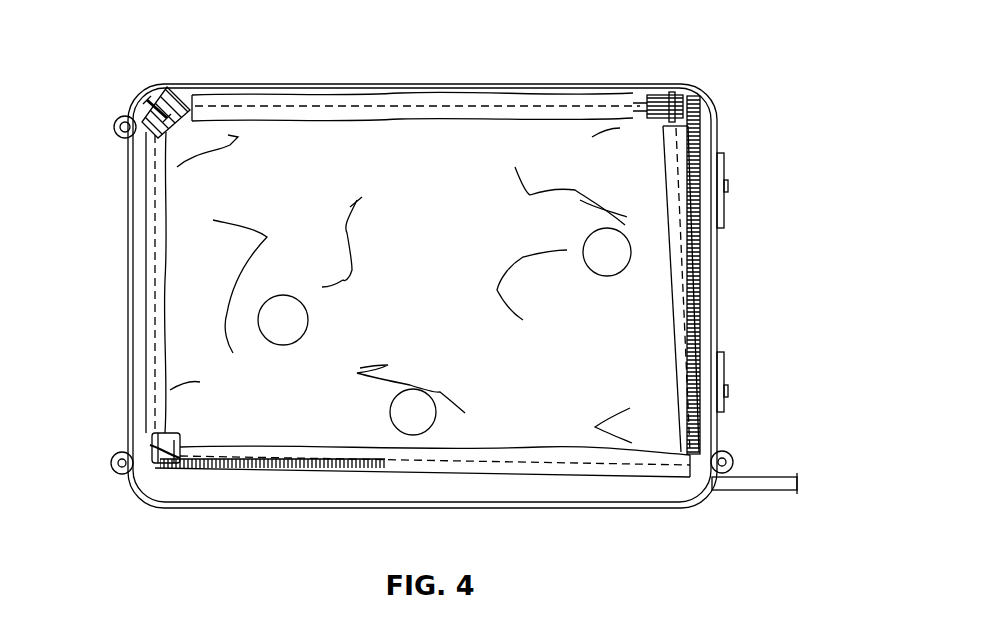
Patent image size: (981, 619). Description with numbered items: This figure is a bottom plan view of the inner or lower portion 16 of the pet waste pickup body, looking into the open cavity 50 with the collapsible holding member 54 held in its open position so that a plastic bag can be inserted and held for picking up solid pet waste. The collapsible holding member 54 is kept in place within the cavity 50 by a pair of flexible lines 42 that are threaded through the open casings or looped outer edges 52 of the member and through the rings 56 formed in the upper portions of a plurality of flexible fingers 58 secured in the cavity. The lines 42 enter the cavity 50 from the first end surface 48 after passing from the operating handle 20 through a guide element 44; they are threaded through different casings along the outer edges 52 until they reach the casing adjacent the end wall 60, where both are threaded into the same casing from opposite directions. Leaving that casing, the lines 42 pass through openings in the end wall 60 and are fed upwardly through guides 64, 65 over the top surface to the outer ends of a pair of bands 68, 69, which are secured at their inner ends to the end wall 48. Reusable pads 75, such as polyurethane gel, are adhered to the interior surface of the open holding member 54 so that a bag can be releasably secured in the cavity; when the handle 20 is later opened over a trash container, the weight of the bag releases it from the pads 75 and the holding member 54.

The inner or lower portion 16 is at (731, 100).
The actuation or operating handle or lever 20 is at (756, 490).
The pair of flexible elongated lines 42 is at (384, 106).
The guide element 44 is at (732, 458).
The first end surface 48 is at (717, 291).
The open cavity 50 is at (604, 502).
The open casings or looped outer edges 52 is at (536, 106).
The collapsible holding member 54 is at (434, 309).
The openings, securing elements or rings 56 is at (161, 90).
The flexible fingers 58 is at (186, 95).
The end wall 60 is at (129, 328).
The guide 64 is at (114, 128).
The guide 65 is at (117, 472).
The band or element 68 is at (726, 372).
The band or element 69 is at (726, 192).
The reusable pads 75 is at (286, 296).